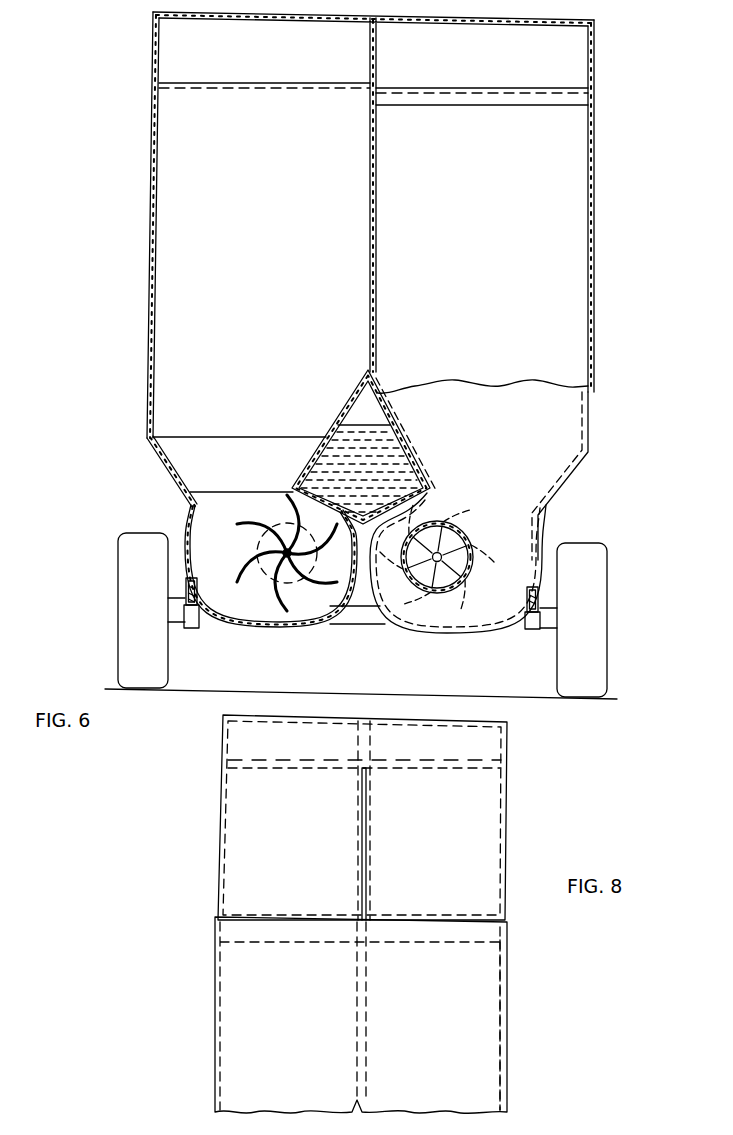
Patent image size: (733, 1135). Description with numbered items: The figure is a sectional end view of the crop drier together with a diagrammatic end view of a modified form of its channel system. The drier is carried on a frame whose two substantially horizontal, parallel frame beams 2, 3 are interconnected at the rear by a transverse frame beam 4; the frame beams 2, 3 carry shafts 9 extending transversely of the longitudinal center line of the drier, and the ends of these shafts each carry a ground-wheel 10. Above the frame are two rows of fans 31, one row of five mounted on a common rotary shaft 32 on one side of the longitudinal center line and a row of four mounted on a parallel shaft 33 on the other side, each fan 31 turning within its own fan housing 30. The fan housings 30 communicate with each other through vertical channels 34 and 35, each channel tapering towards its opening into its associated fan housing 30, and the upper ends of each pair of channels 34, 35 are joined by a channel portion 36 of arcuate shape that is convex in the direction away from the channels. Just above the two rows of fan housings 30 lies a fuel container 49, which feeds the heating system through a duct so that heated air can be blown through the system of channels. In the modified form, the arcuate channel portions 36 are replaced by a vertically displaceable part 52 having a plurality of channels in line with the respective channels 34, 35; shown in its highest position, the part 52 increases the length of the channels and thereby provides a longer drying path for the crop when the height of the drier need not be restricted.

In FIG. 6, the frame beam 2 is at (531, 629).
In FIG. 6, the frame beam 3 is at (191, 628).
In FIG. 6, the frame beam 4 is at (378, 609).
In FIG. 6, the shaft 9 is at (347, 625).
In FIG. 6, the ground-wheel 10 is at (121, 568).
In FIG. 6, the fan housing 30 is at (281, 630).
In FIG. 6, the fan 31 is at (249, 522).
In FIG. 6, the rotary shaft 32 is at (270, 554).
In FIG. 6, the shaft 33 is at (445, 557).
In FIG. 6, the vertical channel 34 is at (151, 187).
In FIG. 8, the vertical channel 34 is at (214, 971).
In FIG. 6, the vertical channel 35 is at (592, 262).
In FIG. 8, the vertical channel 35 is at (504, 1012).
In FIG. 6, the channel portion 36 is at (592, 62).
In FIG. 6, the fuel container 49 is at (377, 420).
In FIG. 8, the vertically displaceable part 52 is at (222, 862).